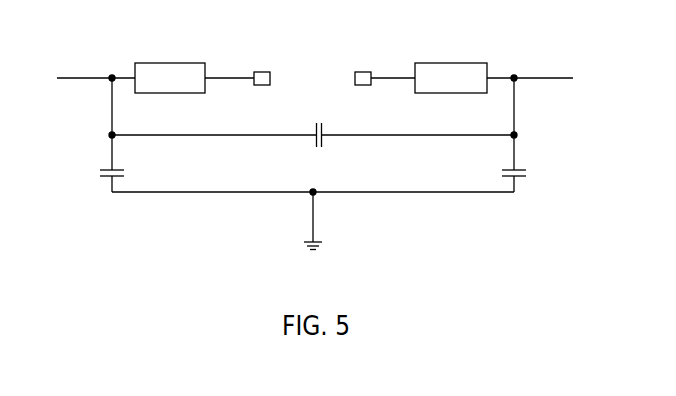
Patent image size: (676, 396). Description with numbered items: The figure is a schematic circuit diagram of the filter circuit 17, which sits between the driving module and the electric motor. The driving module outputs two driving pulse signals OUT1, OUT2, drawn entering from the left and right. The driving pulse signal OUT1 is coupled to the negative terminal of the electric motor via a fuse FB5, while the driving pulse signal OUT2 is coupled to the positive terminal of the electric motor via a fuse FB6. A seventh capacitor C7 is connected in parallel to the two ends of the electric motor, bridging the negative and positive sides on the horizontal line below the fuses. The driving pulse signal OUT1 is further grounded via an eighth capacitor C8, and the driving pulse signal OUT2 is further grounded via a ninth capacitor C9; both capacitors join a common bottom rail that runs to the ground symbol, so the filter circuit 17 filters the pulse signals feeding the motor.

The filter circuit 17 is at (326, 31).
The seventh capacitor C7 is at (335, 144).
The eighth capacitor C8 is at (126, 158).
The ninth capacitor C9 is at (526, 158).
The fuse FB5 is at (170, 78).
The fuse FB6 is at (451, 78).
The driving pulse signal OUT1 is at (92, 64).
The driving pulse signal OUT2 is at (534, 64).